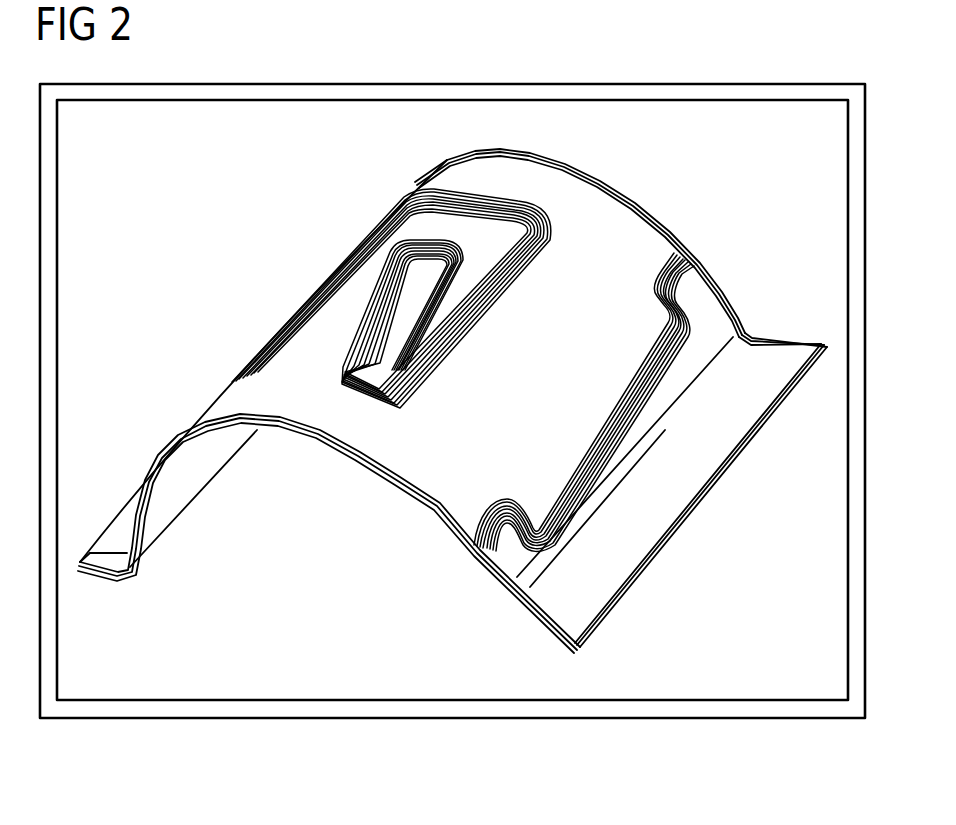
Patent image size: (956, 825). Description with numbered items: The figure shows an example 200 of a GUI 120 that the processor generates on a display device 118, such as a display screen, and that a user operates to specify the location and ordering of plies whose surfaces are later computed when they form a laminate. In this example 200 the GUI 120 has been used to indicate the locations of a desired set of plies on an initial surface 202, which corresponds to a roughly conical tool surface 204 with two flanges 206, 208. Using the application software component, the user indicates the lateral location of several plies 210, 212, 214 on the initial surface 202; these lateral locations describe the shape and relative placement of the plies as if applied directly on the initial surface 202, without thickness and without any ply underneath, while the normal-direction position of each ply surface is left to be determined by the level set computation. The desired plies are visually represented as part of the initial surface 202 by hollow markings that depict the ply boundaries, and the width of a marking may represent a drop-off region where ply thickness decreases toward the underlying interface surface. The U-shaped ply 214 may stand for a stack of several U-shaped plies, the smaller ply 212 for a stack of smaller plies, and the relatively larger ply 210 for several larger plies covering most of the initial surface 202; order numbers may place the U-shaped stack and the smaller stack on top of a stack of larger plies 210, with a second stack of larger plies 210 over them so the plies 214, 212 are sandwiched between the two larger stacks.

The display device 118 is at (533, 718).
The GUI 120 is at (248, 123).
The example 200 is at (773, 57).
The initial surface 202 is at (638, 178).
The tool surface 204 is at (690, 247).
The flange 206 is at (773, 333).
The flange 208 is at (107, 573).
The ply 210 is at (697, 493).
The ply 212 is at (595, 433).
The ply 214 is at (472, 325).